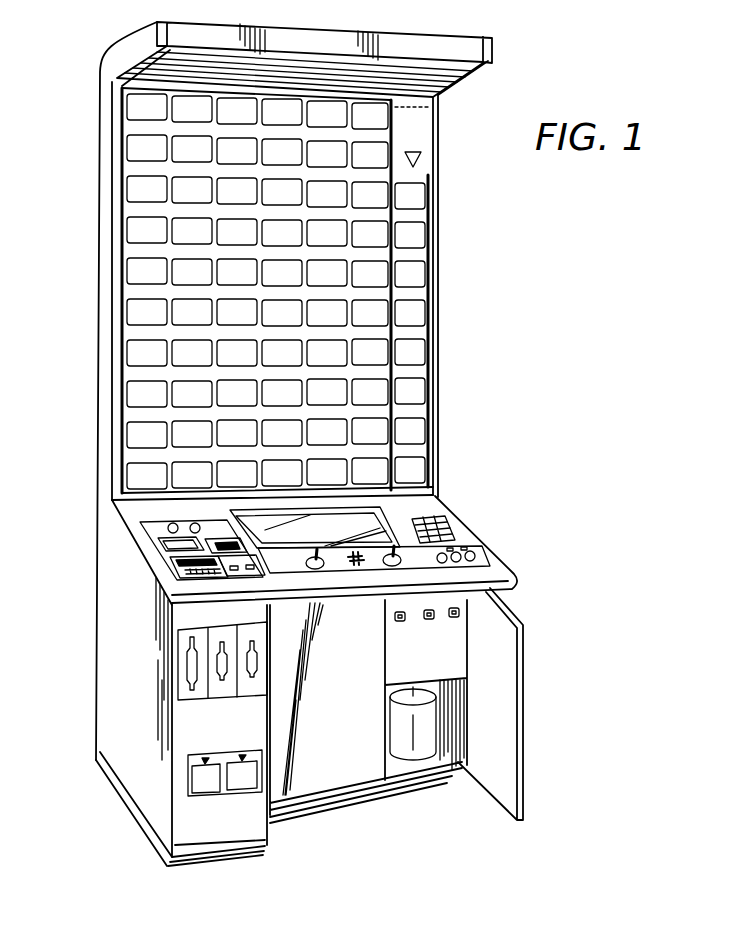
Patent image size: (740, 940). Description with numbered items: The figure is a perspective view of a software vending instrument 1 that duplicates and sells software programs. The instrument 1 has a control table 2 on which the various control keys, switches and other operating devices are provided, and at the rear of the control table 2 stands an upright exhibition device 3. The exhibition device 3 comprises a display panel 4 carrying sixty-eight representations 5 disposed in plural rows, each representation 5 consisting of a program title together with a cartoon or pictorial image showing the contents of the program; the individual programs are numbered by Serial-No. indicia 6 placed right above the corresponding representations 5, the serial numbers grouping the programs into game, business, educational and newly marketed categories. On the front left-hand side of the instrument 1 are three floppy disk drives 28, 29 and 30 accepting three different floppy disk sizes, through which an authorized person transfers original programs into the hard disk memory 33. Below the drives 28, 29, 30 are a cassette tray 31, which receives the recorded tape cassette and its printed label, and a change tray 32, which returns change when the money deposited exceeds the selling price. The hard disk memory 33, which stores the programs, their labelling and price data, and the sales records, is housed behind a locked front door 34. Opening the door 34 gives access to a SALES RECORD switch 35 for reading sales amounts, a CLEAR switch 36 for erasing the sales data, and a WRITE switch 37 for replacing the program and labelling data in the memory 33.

The software vending instrument 1 is at (82, 599).
The control table 2 is at (472, 533).
The exhibition device 3 is at (433, 313).
The display panel 4 is at (428, 262).
The representations 5 is at (135, 193).
The Serial-No. indicia 6 is at (136, 168).
The floppy disk drive 28 is at (187, 665).
The floppy disk drive 29 is at (215, 690).
The floppy disk drive 30 is at (261, 685).
The cassette tray 31 is at (203, 783).
The change tray 32 is at (240, 780).
The hard disk memory 33 is at (410, 755).
The front door 34 is at (505, 753).
The SALES RECORD switch 35 is at (400, 622).
The CLEAR switch 36 is at (430, 620).
The WRITE switch 37 is at (459, 614).